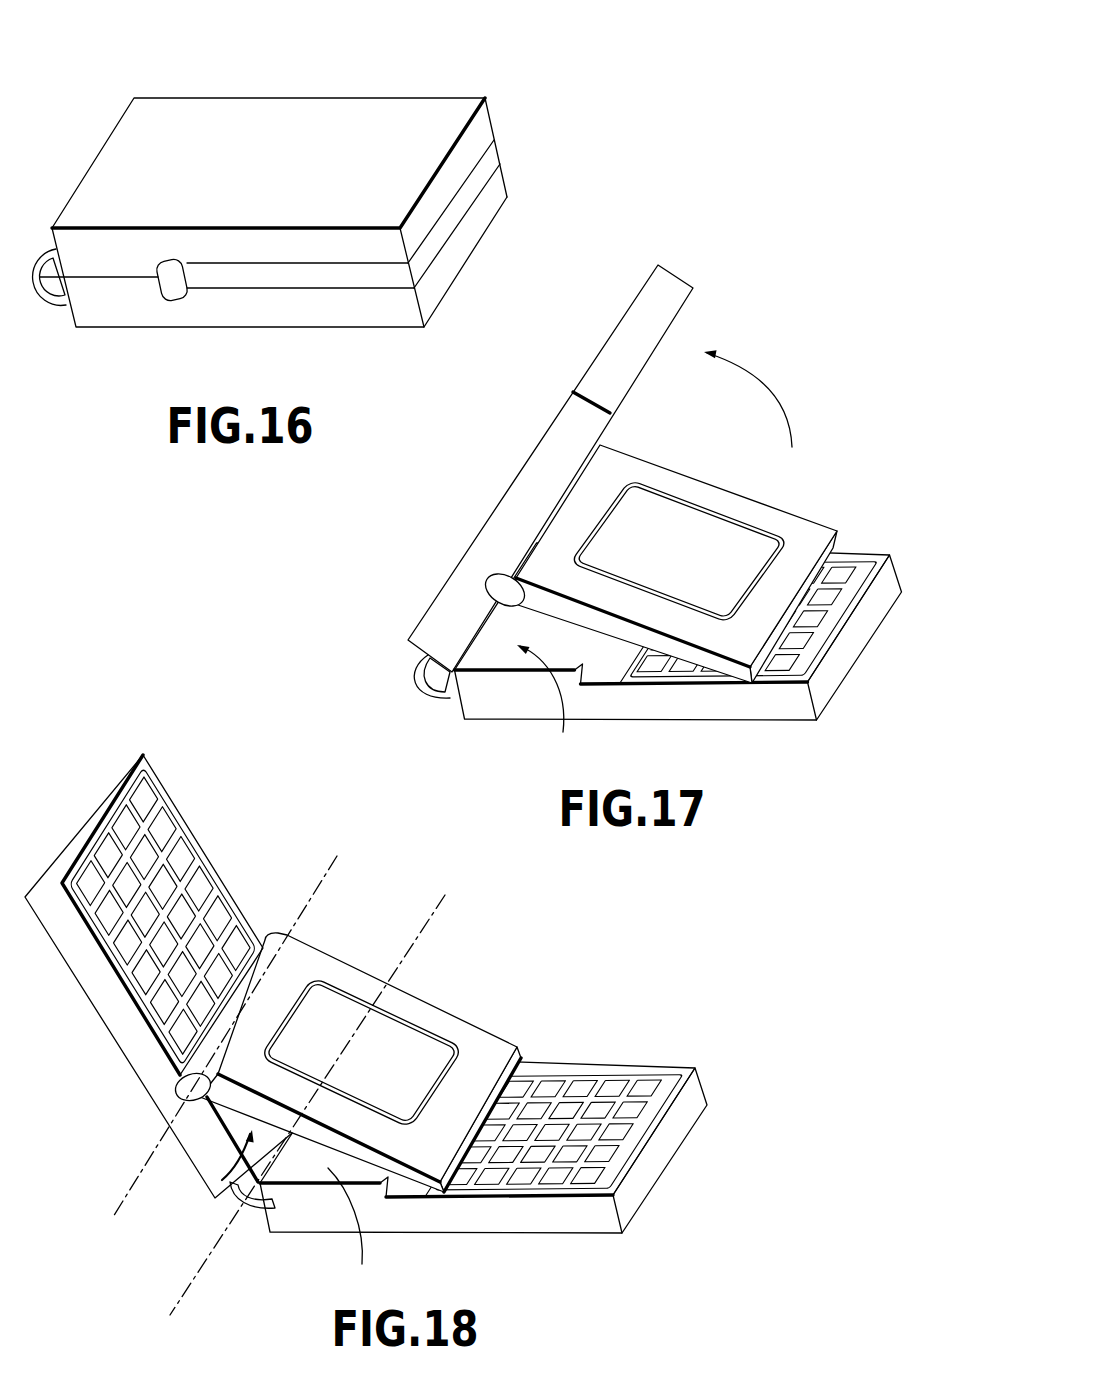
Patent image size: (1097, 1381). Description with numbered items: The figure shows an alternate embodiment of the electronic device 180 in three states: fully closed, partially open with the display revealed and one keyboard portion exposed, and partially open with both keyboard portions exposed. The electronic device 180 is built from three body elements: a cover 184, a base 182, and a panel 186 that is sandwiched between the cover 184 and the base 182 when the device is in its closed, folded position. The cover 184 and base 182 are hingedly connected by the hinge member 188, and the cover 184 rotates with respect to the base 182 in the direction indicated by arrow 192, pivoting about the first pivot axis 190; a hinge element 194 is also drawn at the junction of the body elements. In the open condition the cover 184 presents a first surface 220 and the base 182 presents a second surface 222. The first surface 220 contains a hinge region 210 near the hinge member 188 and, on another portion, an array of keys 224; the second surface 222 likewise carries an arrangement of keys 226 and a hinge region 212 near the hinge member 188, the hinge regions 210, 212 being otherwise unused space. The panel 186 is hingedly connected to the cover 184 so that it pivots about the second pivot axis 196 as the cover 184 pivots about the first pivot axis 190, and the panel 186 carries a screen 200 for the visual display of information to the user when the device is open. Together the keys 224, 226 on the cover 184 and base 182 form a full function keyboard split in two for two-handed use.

In FIG. 16, the electronic device 180 is at (289, 192).
In FIG. 16, the base 182 is at (430, 300).
In FIG. 17, the base 182 is at (678, 657).
In FIG. 18, the base 182 is at (502, 1156).
In FIG. 16, the cover 184 is at (479, 122).
In FIG. 17, the cover 184 is at (670, 270).
In FIG. 18, the cover 184 is at (158, 967).
In FIG. 16, the panel 186 is at (497, 142).
In FIG. 17, the panel 186 is at (674, 564).
In FIG. 18, the panel 186 is at (367, 1062).
In FIG. 16, the hinge member 188 is at (39, 299).
In FIG. 17, the hinge member 188 is at (432, 676).
In FIG. 18, the first pivot axis 190 is at (440, 902).
In FIG. 17, the arrow 192 is at (766, 380).
In FIG. 16, the hinge 194 is at (176, 290).
In FIG. 17, the hinge 194 is at (507, 592).
In FIG. 18, the hinge 194 is at (193, 1087).
In FIG. 18, the second pivot axis 196 is at (335, 855).
In FIG. 18, the screen 200 is at (437, 1056).
In FIG. 18, the hinge region 210 is at (216, 1197).
In FIG. 17, the hinge region 212 is at (549, 706).
In FIG. 18, the hinge region 212 is at (356, 1231).
In FIG. 18, the first surface 220 is at (163, 914).
In FIG. 18, the second surface 222 is at (588, 1175).
In FIG. 18, the array of keys 224 is at (108, 855).
In FIG. 17, the arrangement of keys 226 is at (818, 690).
In FIG. 18, the arrangement of keys 226 is at (556, 1105).